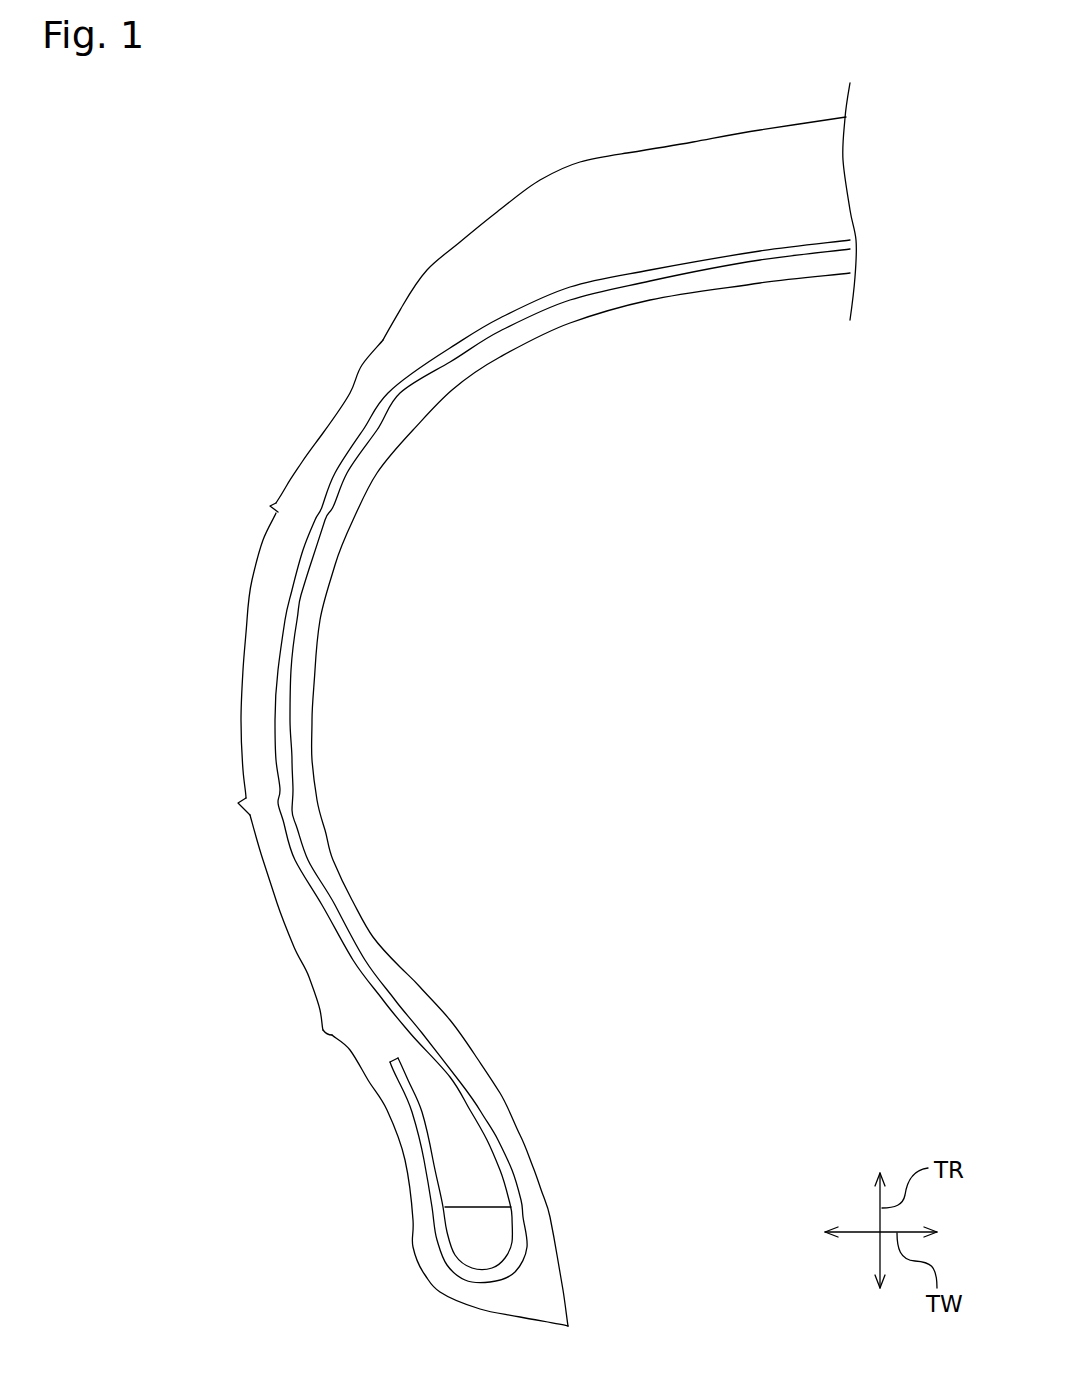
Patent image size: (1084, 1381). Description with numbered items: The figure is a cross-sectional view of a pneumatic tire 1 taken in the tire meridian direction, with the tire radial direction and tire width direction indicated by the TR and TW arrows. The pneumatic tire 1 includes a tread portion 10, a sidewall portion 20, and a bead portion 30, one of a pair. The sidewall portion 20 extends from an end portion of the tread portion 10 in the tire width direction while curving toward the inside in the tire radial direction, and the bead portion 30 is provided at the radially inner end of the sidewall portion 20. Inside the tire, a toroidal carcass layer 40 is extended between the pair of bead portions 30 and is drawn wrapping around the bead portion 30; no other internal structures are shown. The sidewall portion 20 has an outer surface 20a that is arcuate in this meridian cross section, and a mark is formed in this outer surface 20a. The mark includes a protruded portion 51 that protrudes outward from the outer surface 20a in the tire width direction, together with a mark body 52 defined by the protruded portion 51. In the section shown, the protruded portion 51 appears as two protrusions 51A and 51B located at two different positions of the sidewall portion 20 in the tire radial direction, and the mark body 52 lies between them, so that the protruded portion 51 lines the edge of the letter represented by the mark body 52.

The pneumatic tire 1 is at (291, 207).
The tread portion 10 is at (580, 162).
The sidewall portion 20 is at (245, 503).
The outer surface 20a is at (327, 422).
The bead portion 30 is at (402, 1132).
The carcass layer 40 is at (390, 412).
The protruded portion 51 is at (258, 659).
The protrusion 51A is at (288, 505).
The protrusion 51B is at (257, 807).
The mark body 52 is at (255, 722).